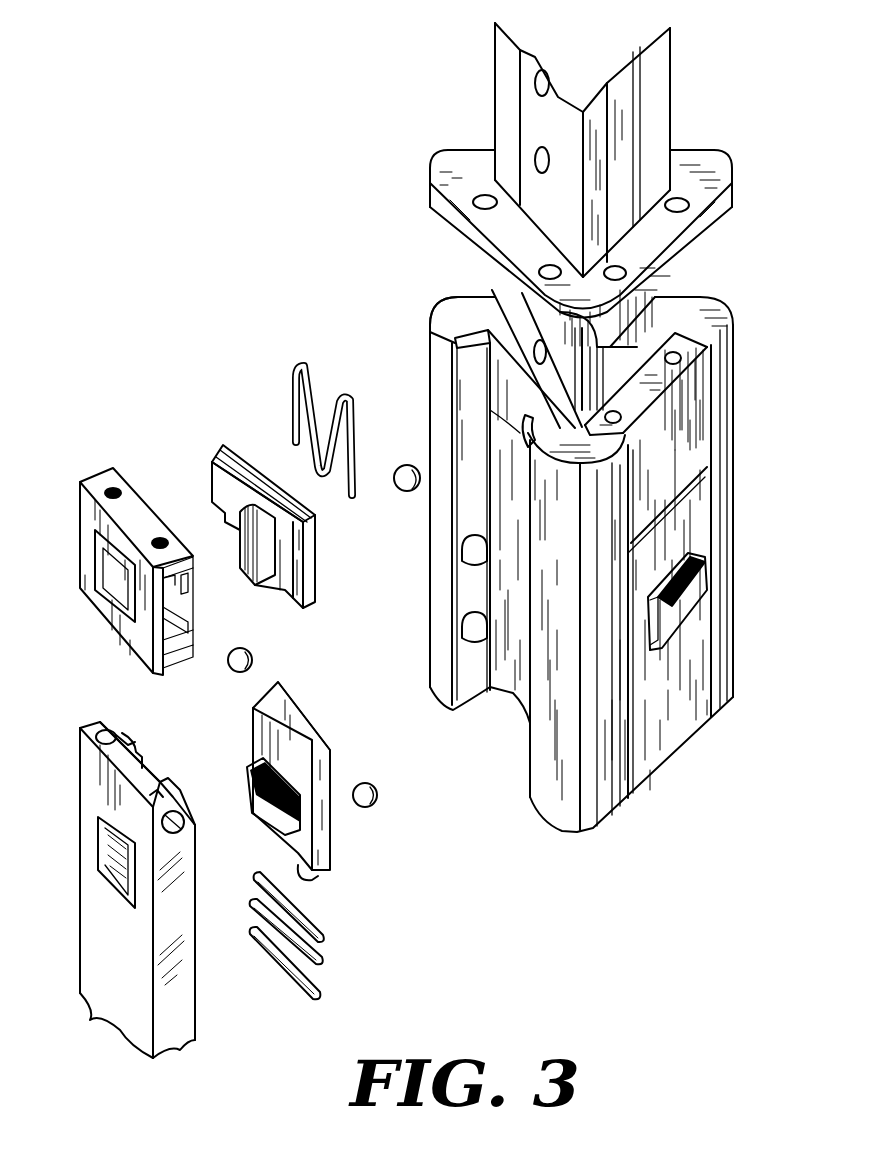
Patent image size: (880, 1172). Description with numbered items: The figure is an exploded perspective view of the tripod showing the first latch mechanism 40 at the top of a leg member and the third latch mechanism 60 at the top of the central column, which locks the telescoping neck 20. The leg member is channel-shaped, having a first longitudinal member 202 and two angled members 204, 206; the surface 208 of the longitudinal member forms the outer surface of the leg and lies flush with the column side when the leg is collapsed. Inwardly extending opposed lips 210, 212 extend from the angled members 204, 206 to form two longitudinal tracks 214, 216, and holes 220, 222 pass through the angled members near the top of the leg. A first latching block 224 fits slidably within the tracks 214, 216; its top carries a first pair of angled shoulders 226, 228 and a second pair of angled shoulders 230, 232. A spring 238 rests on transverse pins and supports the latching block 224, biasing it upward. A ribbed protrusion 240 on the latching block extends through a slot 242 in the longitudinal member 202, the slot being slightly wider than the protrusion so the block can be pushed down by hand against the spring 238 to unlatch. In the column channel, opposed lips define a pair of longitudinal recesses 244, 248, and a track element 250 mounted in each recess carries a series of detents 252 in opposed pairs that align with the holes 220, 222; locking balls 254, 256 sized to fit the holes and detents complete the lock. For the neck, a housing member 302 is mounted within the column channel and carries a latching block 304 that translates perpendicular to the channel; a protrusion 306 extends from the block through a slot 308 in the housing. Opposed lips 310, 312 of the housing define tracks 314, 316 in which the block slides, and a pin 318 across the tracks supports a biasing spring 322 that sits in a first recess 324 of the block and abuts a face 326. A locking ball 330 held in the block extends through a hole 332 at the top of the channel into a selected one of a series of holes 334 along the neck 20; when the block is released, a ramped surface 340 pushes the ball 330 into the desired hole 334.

The neck 20 is at (609, 150).
The first latch mechanism 40 is at (583, 619).
The third latch mechanism 60 is at (108, 355).
The first longitudinal member 202 is at (108, 890).
The angled member 204 is at (210, 941).
The angled member 206 is at (90, 740).
The surface 208 is at (117, 942).
The lip 210 is at (194, 791).
The lip 212 is at (161, 734).
The track 214 is at (184, 764).
The track 216 is at (130, 710).
The hole 220 is at (203, 833).
The hole 222 is at (85, 705).
The first latching block 224 is at (345, 872).
The angled shoulder 226 is at (338, 716).
The angled shoulder 228 is at (291, 757).
The angled shoulder 230 is at (366, 802).
The angled shoulder 232 is at (219, 685).
The spring 238 is at (323, 935).
The protrusion 240 is at (516, 633).
The slot 242 is at (397, 617).
The longitudinal recess 244 is at (637, 378).
The longitudinal recess 248 is at (416, 315).
The track element 250 is at (431, 524).
The detents 252 is at (429, 594).
The locking ball 254 is at (392, 784).
The locking ball 256 is at (260, 644).
The housing member 302 is at (105, 571).
The latching block 304 is at (294, 528).
The protrusion 306 is at (300, 545).
The slot 308 is at (74, 586).
The lip 310 is at (200, 629).
The lip 312 is at (199, 561).
The track 314 is at (200, 613).
The track 316 is at (208, 580).
The pin 318 is at (76, 576).
The biasing spring 322 is at (287, 429).
The first recess 324 is at (229, 460).
The face 326 is at (265, 456).
The locking ball 330 is at (376, 496).
The hole 332 is at (453, 417).
The holes 334 is at (491, 106).
The ramped surface 340 is at (483, 130).